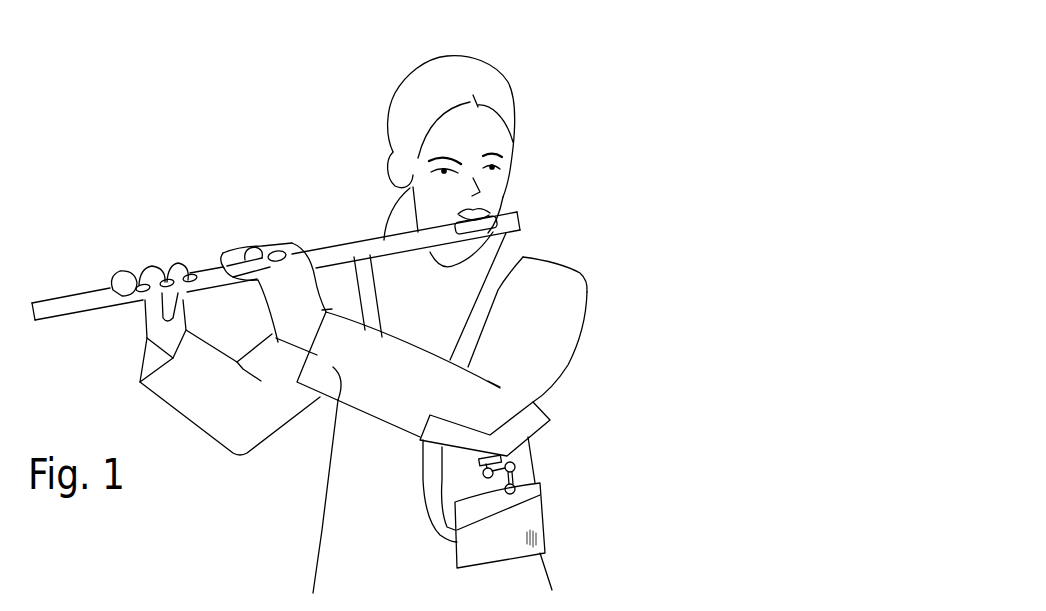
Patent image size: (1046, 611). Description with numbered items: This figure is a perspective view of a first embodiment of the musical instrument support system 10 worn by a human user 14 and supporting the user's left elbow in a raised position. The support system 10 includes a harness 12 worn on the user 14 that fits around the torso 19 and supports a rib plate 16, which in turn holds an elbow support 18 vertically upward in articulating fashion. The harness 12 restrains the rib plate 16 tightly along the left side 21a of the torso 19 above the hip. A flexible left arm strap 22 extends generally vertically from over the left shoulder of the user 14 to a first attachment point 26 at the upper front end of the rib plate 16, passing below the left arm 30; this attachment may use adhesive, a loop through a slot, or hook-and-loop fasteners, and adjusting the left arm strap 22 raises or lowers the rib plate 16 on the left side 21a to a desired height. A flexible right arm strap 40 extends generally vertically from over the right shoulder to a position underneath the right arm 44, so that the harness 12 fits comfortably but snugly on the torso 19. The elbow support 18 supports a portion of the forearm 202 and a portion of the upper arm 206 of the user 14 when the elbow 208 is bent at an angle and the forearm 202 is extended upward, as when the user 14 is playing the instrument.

The musical instrument support system 10 is at (680, 130).
The harness 12 is at (520, 253).
The human user 14 is at (523, 100).
The rib plate 16 is at (523, 532).
The elbow support 18 is at (545, 428).
The torso 19 is at (367, 487).
The left side 21a is at (537, 572).
The left arm strap 22 is at (523, 258).
The first attachment point 26 is at (538, 492).
The left arm 30 is at (330, 408).
The right arm strap 40 is at (363, 287).
The right arm 44 is at (280, 415).
The forearm 202 is at (378, 350).
The upper arm 206 is at (557, 337).
The elbow 208 is at (513, 405).